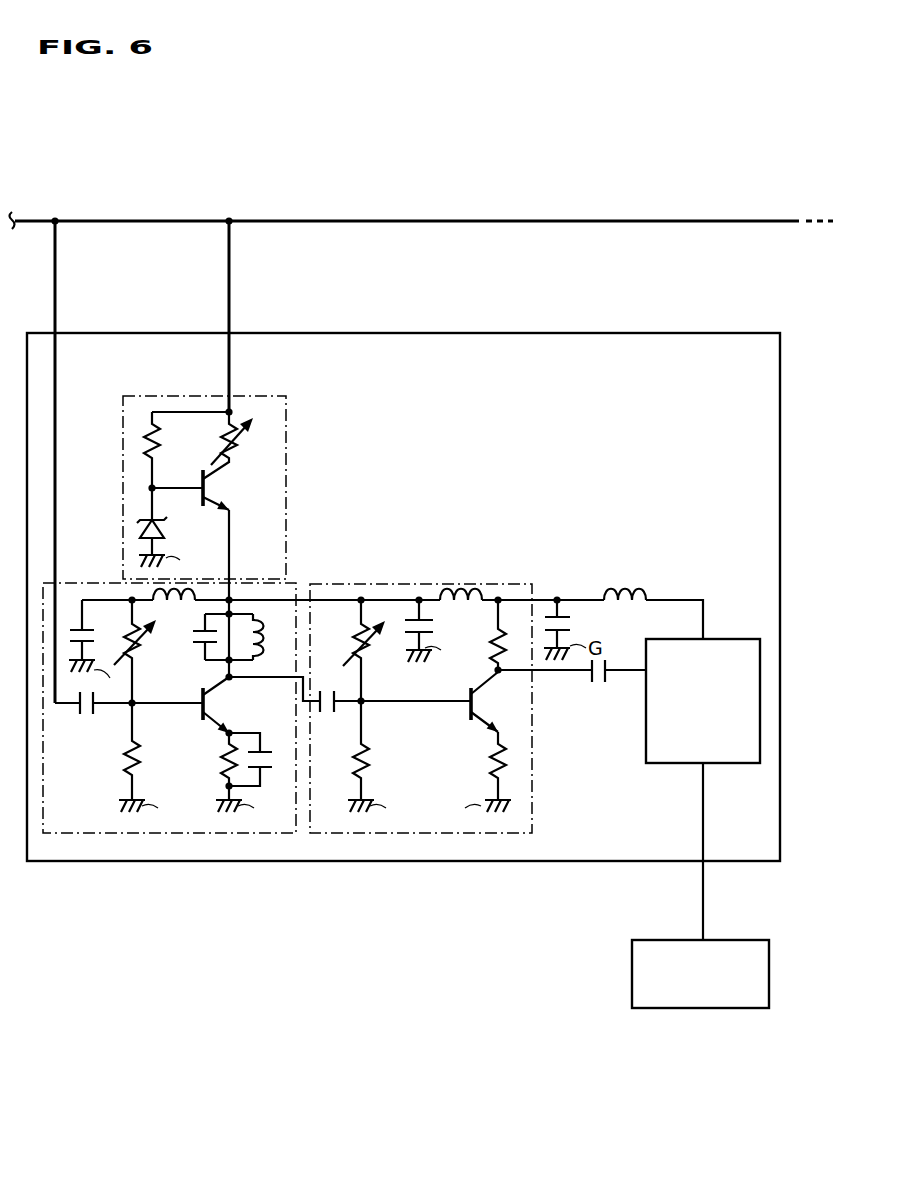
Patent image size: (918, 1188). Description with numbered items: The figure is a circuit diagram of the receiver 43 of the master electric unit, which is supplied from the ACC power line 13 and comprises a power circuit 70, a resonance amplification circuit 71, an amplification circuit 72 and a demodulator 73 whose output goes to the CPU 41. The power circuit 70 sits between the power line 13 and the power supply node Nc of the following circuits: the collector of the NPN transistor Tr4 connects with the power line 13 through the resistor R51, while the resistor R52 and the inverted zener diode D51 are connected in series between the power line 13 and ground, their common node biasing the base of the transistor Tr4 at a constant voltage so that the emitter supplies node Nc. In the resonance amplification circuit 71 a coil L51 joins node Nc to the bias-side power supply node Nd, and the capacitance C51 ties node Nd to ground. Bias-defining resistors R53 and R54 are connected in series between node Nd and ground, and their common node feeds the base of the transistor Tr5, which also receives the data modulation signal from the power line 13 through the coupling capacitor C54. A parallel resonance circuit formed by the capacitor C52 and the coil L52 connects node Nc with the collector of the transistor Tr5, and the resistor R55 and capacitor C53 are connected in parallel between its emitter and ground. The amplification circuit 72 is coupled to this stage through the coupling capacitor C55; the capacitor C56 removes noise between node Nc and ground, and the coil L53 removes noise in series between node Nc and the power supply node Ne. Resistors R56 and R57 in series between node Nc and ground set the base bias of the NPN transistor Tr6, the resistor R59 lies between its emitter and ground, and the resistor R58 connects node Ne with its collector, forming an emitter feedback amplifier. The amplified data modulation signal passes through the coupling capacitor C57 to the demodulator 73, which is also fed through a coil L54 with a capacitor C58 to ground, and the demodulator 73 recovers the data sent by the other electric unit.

The ACC power line 13 is at (40, 221).
The receiver 43 is at (478, 333).
The power circuit 70 is at (236, 498).
The resonance amplification circuit 71 is at (181, 678).
The amplification circuit 72 is at (421, 678).
The demodulator 73 is at (739, 639).
The CPU 41 is at (770, 973).
The resistor R51 is at (240, 460).
The resistor R52 is at (168, 445).
The zener diode D51 is at (170, 527).
The NPN transistor Tr4 is at (228, 510).
The power supply node Nc is at (303, 592).
The power supply node Nd is at (124, 598).
The power supply node Ne is at (498, 592).
The capacitance C51 is at (94, 637).
The resistor R53 is at (150, 646).
The coil L51 is at (148, 586).
The capacitor C52 is at (188, 662).
The coil L52 is at (260, 639).
The transistor Tr5 is at (184, 716).
The capacitor C53 is at (268, 738).
The coupling capacitor C54 is at (88, 721).
The resistor R54 is at (120, 762).
The resistor R55 is at (218, 759).
The resistor R56 is at (358, 640).
The resistor R57 is at (374, 752).
The coupling capacitor C55 is at (326, 719).
The capacitor C56 is at (437, 624).
The coil L53 is at (460, 592).
The resistor R58 is at (484, 666).
The NPN transistor Tr6 is at (452, 716).
The resistor R59 is at (487, 770).
The coupling capacitor C57 is at (600, 690).
The capacitor C58 is at (575, 624).
The coil L54 is at (622, 590).